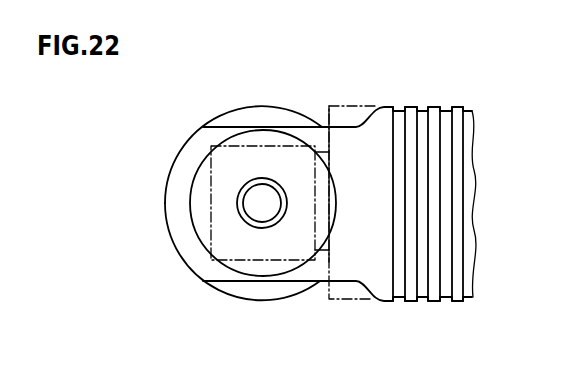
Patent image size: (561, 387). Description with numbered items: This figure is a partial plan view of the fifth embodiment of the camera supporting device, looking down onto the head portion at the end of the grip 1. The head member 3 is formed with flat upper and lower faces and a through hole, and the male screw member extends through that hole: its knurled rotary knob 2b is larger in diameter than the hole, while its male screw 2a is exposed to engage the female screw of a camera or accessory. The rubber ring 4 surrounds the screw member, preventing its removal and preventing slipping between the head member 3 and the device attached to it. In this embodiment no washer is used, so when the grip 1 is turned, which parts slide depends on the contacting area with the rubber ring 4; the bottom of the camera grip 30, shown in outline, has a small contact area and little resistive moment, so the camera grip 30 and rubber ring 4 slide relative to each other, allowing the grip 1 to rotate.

The grip 1 is at (457, 290).
The male screw 2a is at (257, 207).
The rotary knob 2b is at (248, 296).
The head member 3 is at (196, 139).
The rubber ring 4 is at (200, 188).
The camera grip 30 is at (276, 155).